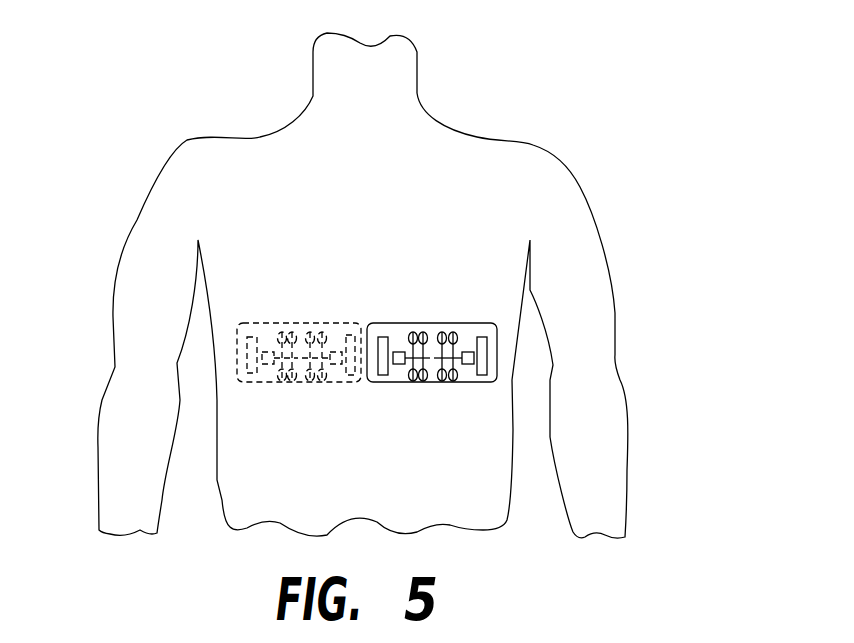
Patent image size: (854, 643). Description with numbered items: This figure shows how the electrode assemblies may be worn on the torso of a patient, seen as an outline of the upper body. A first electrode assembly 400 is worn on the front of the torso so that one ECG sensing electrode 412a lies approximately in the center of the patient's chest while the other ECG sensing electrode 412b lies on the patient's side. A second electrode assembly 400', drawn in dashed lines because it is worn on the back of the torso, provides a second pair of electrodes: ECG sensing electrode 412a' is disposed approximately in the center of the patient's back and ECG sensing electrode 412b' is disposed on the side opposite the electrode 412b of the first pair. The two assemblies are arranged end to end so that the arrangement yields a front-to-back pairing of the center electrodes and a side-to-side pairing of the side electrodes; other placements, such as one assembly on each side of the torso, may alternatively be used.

The electrode assembly 400 is at (432, 387).
The second electrode assembly 400' is at (299, 387).
The ECG sensing electrode 412a is at (423, 293).
The ECG sensing electrode 412b is at (522, 293).
The ECG sensing electrode 412a' is at (317, 293).
The ECG sensing electrode 412b' is at (216, 292).